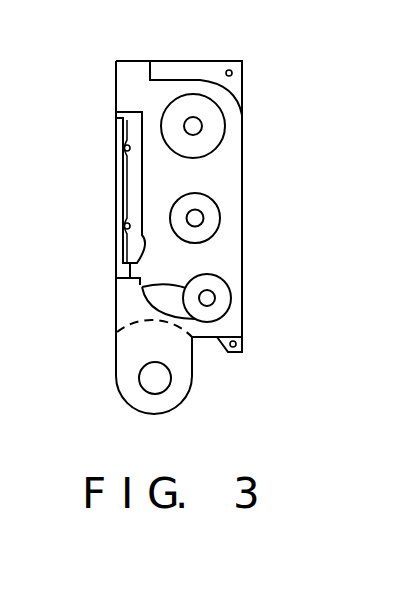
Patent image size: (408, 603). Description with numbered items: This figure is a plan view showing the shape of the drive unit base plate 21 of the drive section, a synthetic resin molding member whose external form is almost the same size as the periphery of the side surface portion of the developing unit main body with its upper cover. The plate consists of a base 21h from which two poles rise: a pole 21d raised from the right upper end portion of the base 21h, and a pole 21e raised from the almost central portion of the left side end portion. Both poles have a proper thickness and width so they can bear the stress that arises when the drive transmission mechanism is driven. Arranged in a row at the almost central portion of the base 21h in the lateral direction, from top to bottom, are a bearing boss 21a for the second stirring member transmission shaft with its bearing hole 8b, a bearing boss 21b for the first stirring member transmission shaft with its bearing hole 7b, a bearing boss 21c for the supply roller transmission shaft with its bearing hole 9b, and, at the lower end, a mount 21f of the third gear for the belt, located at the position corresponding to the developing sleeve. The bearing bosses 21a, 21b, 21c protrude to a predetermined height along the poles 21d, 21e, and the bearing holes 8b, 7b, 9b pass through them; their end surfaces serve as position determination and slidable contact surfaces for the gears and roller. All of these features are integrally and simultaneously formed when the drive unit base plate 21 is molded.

The drive unit base plate 21 is at (258, 53).
The bearing boss 21a is at (202, 126).
The bearing boss 21b is at (204, 220).
The bearing boss 21c is at (216, 296).
The pole 21d is at (188, 78).
The pole 21e is at (133, 184).
The mount of the third gear for the belt 21f is at (183, 390).
The base 21h is at (232, 173).
The bearing hole 8b is at (184, 124).
The bearing hole 7b is at (187, 221).
The bearing hole 9b is at (143, 287).